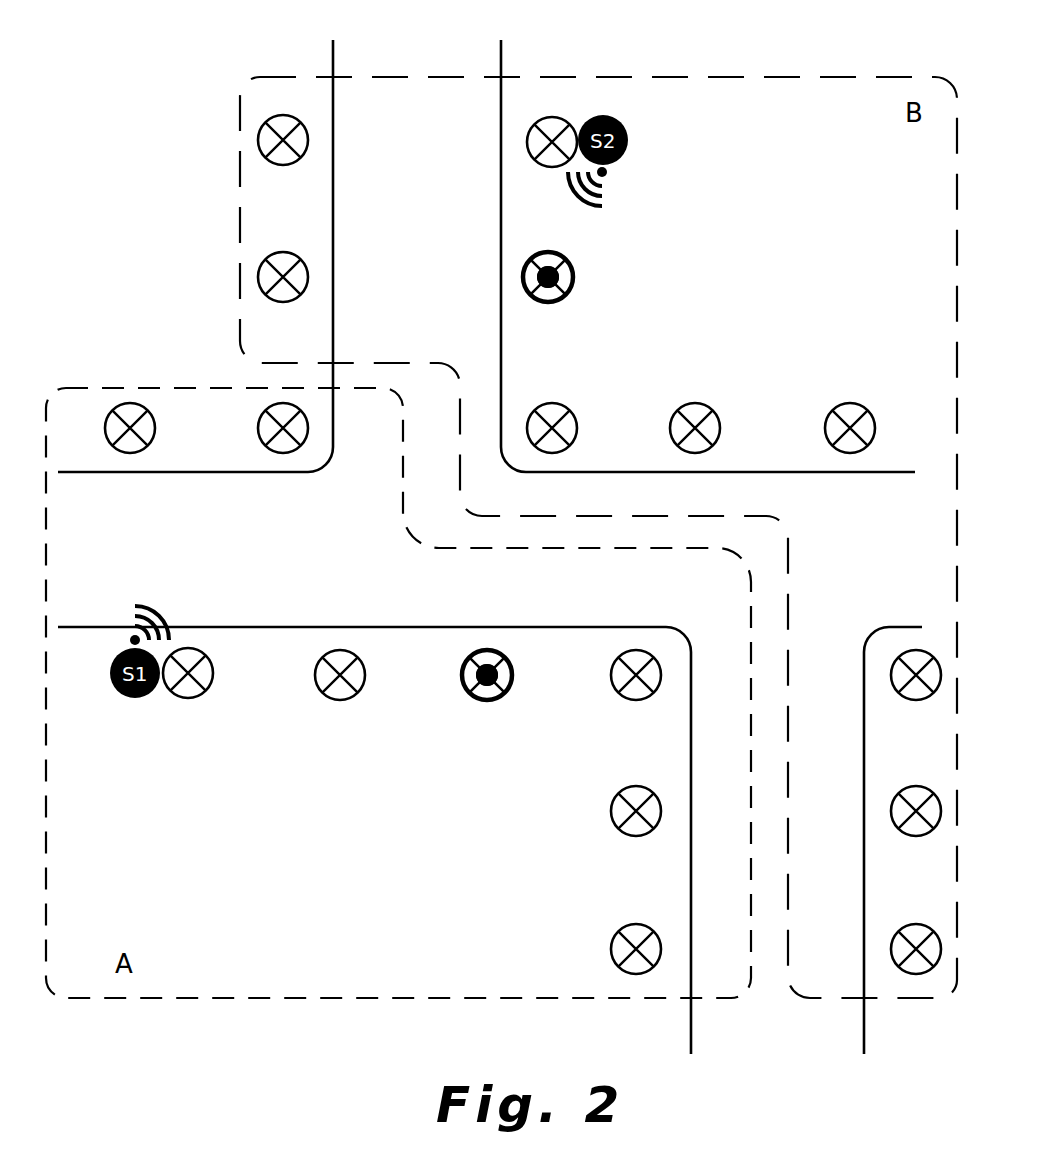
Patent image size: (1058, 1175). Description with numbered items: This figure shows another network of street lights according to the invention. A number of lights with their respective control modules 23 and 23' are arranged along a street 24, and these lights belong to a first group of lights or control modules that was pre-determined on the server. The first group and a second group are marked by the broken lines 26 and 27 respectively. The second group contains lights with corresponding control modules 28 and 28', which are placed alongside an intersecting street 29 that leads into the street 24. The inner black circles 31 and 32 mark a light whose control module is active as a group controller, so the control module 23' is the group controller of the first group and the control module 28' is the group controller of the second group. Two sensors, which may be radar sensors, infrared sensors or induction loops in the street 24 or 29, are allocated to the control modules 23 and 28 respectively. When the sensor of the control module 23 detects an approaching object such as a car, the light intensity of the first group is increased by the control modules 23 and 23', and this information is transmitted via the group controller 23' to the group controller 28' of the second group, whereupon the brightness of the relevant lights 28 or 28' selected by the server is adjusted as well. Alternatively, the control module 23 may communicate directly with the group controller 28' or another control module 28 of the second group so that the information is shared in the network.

The control module 23 is at (506, 663).
The control module 23' is at (504, 698).
The street 24 is at (490, 547).
The broken line 26 is at (392, 998).
The broken line 27 is at (428, 73).
The control module 28 is at (566, 284).
The control module 28' is at (568, 295).
The intersecting street 29 is at (657, 256).
The inner black circle 31 is at (465, 677).
The inner black circle 32 is at (560, 275).